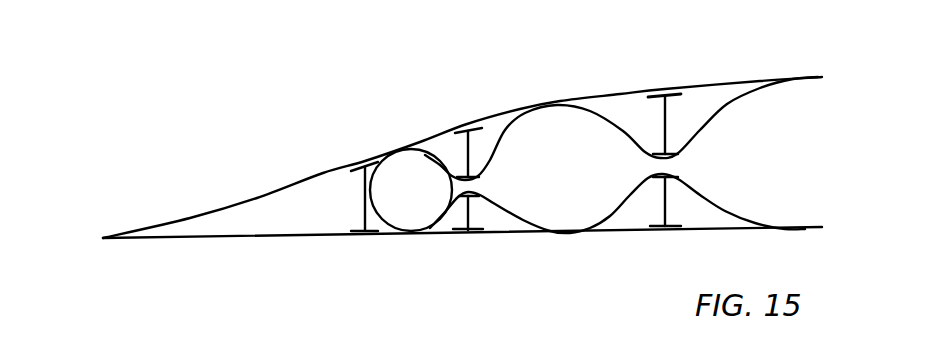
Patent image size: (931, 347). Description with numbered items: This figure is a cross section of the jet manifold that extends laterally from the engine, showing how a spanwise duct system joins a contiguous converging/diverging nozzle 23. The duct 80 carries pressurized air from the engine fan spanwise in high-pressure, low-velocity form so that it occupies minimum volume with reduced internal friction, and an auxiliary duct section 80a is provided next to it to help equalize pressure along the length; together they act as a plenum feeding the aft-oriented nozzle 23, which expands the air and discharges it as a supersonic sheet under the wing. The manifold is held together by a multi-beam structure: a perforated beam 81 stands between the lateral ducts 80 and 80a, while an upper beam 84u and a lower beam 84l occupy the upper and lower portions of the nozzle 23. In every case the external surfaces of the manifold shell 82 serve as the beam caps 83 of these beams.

The duct 80 is at (416, 185).
The auxiliary duct section 80a is at (563, 157).
The perforated beam 81 is at (471, 152).
The manifold shell 82 is at (637, 93).
The beam cap 83 is at (669, 98).
The upper beam 84u is at (670, 125).
The lower beam 84l is at (667, 217).
The converging/diverging nozzle 23 is at (743, 209).